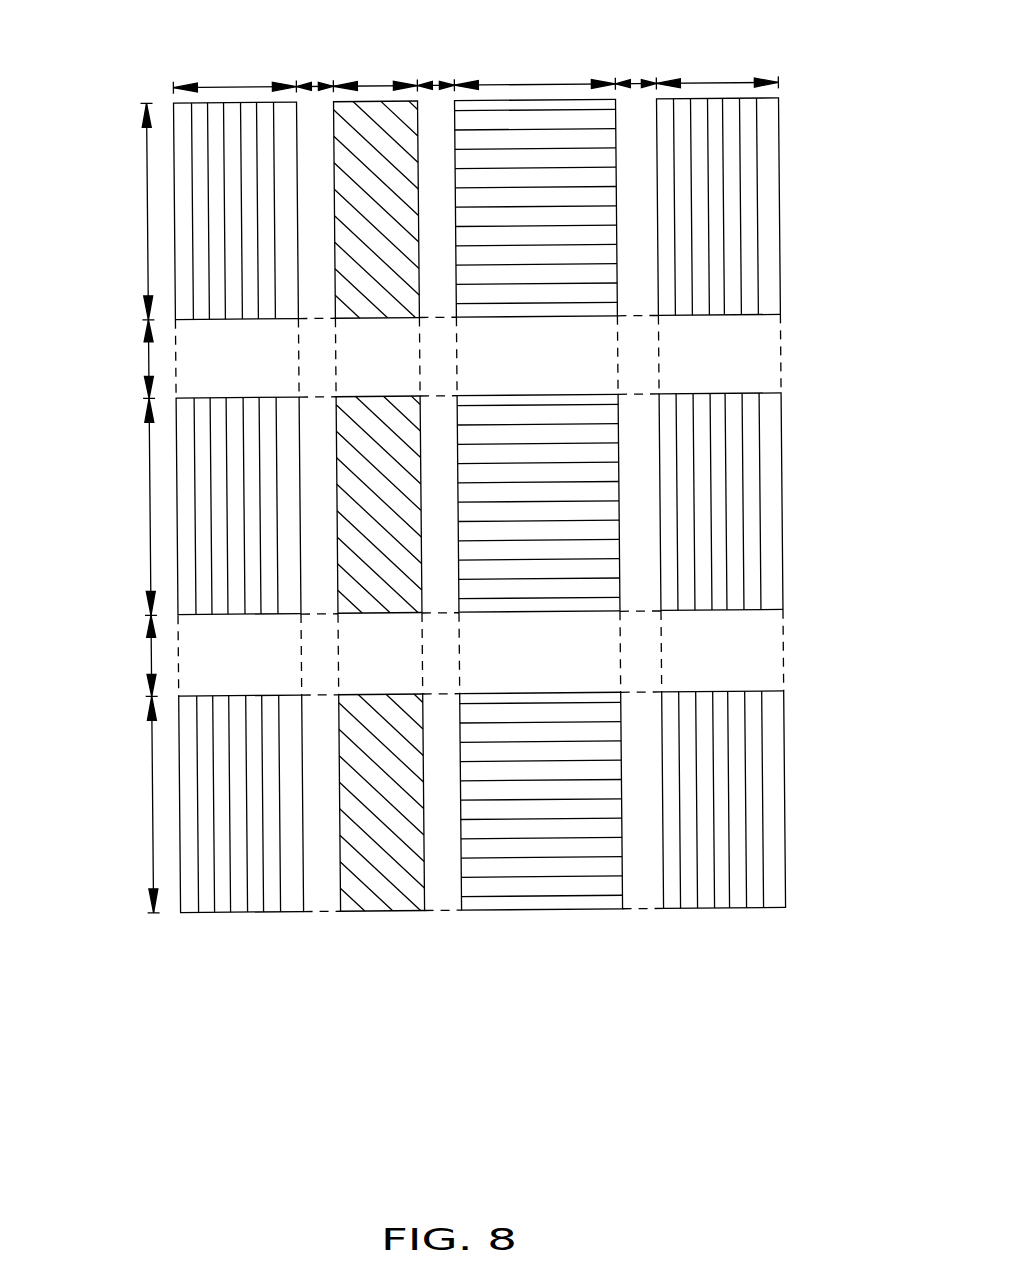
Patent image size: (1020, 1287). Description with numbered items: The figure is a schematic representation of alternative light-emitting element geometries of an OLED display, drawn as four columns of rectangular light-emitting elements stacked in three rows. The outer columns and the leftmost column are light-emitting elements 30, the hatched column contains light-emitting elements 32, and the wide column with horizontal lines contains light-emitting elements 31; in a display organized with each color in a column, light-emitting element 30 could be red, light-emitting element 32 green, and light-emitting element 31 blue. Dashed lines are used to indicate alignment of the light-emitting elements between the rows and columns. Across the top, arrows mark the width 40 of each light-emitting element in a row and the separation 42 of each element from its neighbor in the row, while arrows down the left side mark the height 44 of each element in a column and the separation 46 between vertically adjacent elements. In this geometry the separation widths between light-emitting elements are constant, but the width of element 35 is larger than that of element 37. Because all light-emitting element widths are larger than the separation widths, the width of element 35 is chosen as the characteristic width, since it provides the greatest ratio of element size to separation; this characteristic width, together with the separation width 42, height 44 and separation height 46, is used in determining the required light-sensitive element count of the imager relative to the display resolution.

The light-emitting element 30 is at (773, 187).
The blue light-emitting element 31 is at (539, 546).
The light-emitting element 32 is at (380, 547).
The light-emitting element 35 is at (555, 293).
The light-emitting element 37 is at (370, 299).
The width of light-emitting element 40 is at (232, 81).
The separation width 42 is at (317, 82).
The height of light-emitting element 44 is at (150, 209).
The separation height 46 is at (149, 362).